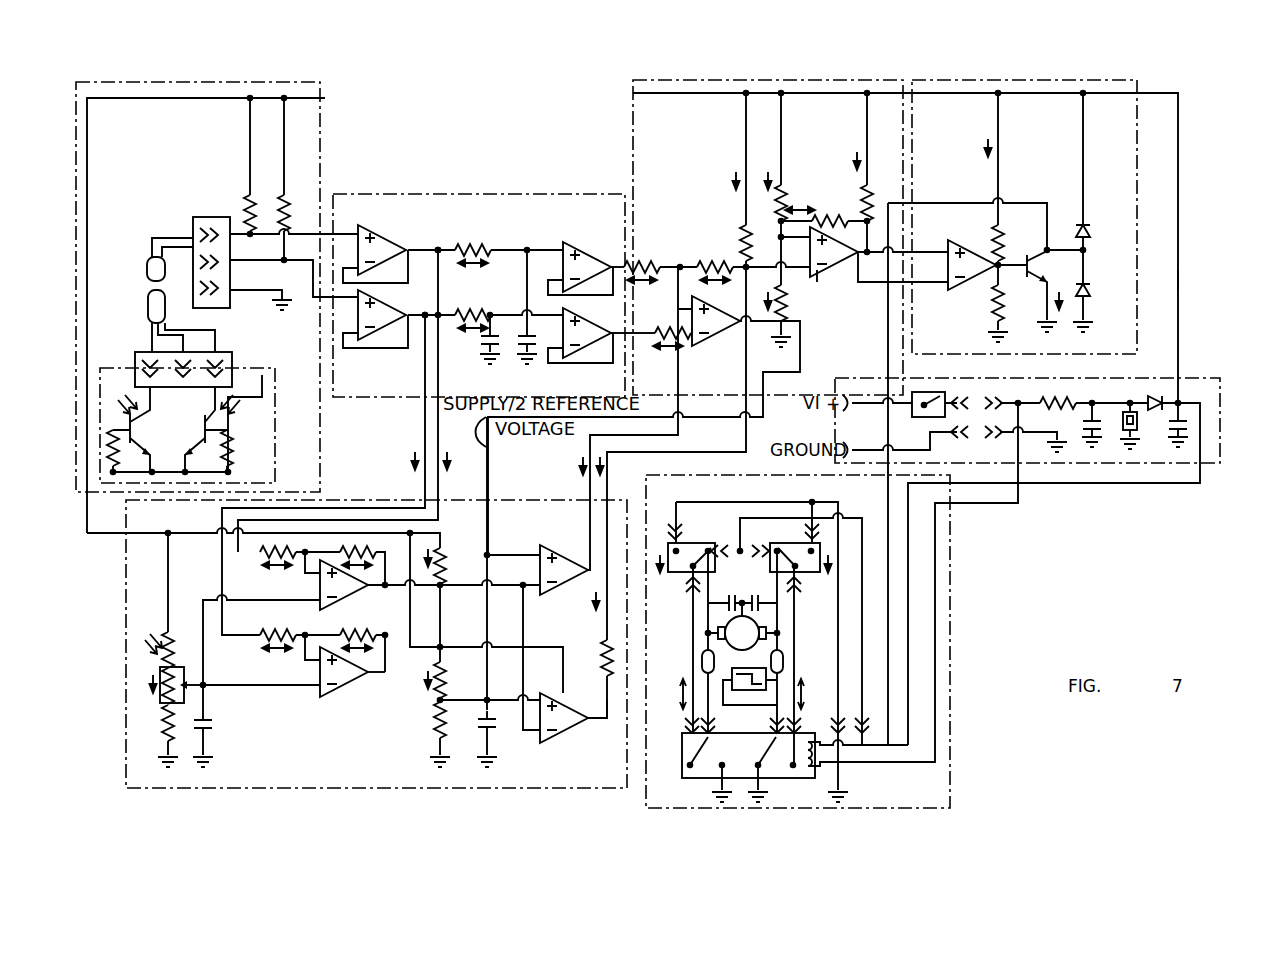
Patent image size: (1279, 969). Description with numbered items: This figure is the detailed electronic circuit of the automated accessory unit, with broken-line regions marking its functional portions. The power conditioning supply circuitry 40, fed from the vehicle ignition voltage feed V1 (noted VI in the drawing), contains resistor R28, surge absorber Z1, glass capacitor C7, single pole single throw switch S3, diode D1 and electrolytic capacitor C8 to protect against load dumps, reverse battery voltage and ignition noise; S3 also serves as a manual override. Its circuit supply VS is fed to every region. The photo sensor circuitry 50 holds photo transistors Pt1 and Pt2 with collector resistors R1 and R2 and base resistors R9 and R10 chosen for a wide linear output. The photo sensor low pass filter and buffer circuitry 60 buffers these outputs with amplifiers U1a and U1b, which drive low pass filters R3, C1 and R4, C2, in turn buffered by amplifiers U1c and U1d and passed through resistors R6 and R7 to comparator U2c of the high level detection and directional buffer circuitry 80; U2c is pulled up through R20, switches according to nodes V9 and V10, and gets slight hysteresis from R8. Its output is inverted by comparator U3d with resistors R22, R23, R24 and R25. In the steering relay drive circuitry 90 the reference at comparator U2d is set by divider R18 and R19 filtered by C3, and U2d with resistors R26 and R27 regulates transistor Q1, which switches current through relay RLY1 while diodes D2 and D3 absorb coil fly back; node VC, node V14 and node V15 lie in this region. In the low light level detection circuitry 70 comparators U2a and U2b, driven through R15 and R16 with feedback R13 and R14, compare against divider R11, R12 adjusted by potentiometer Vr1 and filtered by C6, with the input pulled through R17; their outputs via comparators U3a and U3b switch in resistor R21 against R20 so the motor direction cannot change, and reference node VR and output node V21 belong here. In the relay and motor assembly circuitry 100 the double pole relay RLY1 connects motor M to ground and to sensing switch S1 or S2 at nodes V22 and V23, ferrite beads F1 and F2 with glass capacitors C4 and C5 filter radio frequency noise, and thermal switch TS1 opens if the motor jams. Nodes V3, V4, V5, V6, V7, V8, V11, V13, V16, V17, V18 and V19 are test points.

The photo sensor circuitry 50 is at (234, 82).
The photo sensor low pass filter and buffer circuitry 60 is at (506, 190).
The low light level detection circuitry 70 is at (124, 602).
The high level light intensity detection and directional buffer circuitry 80 is at (804, 82).
The steering relay drive circuitry 90 is at (1044, 82).
The relay and motor assembly circuitry 100 is at (950, 612).
The power conditioning supply circuitry 40 is at (1222, 407).
The collector resistor R1 is at (282, 200).
The collector resistor R2 is at (244, 194).
The low pass filter resistor R3 is at (492, 248).
The low pass filter resistor R4 is at (472, 309).
The input resistor R6 is at (660, 260).
The input resistor R7 is at (669, 329).
The hysteresis resistor R8 is at (715, 262).
The base resistor R9 is at (213, 451).
The base resistor R10 is at (129, 451).
The resistor divider resistor R11 is at (175, 636).
The resistor divider resistor R12 is at (153, 736).
The hysteresis feedback resistor R13 is at (372, 557).
The hysteresis feedback resistor R14 is at (348, 639).
The input resistor R15 is at (263, 560).
The input resistor R16 is at (281, 641).
The pull-up resistor R17 is at (442, 562).
The reference divider resistor R18 is at (432, 682).
The reference divider resistor R19 is at (434, 732).
The pull-up resistor R20 is at (740, 226).
The divider resistor R21 is at (598, 650).
The inverting comparator resistor R22 is at (785, 206).
The inverting comparator resistor R23 is at (796, 302).
The inverting comparator resistor R24 is at (824, 210).
The inverting comparator resistor R25 is at (860, 184).
The transistor drive resistor R26 is at (1013, 189).
The transistor drive resistor R27 is at (1018, 313).
The resistor R28 is at (1056, 391).
The low pass filter capacitor C1 is at (477, 346).
The low pass filter capacitor C2 is at (517, 346).
The filter capacitor C3 is at (480, 724).
The high Q glass capacitor C4 is at (729, 595).
The high Q glass capacitor C5 is at (754, 595).
The filter capacitor C6 is at (207, 730).
The glass capacitor C7 is at (1112, 428).
The electrolytic capacitor C8 is at (1174, 433).
The buffering amplifier U1a is at (394, 234).
The buffering amplifier U1b is at (343, 332).
The buffering amplifier U1c is at (570, 268).
The buffering amplifier U1d is at (562, 351).
The open collector comparator U2a is at (407, 585).
The open collector comparator U2b is at (329, 672).
The open collector comparator U2c is at (644, 415).
The open collector comparator U2d is at (957, 278).
The comparator U3a is at (564, 560).
The comparator U3b is at (573, 722).
The comparator U3d is at (834, 255).
The photo transistor Pt1 is at (218, 429).
The photo transistor Pt2 is at (142, 429).
The potentiometer Vr1 is at (204, 672).
The transistor Q1 is at (1032, 262).
The diode D1 is at (1150, 398).
The diode D2 is at (1086, 232).
The diode D3 is at (1095, 305).
The surge absorber Z1 is at (1141, 424).
The sensing switch S1 is at (694, 546).
The sensing switch S2 is at (801, 641).
The single pole single throw switch S3 is at (923, 420).
The ferrite bead F1 is at (700, 661).
The ferrite bead F2 is at (786, 661).
The motor M is at (742, 626).
The bimetal current limit thermal safety switch TS1 is at (747, 695).
The double pole double throw relay switch RLY1 is at (795, 767).
The voltage feed V1 is at (918, 571).
The test node V3 is at (419, 238).
The test node V4 is at (412, 303).
The test node V5 is at (530, 237).
The test node V6 is at (494, 309).
The test node V7 is at (612, 260).
The test node V8 is at (621, 319).
The test node V9 is at (677, 256).
The test node V10 is at (666, 332).
The test node V11 is at (768, 325).
The test node V13 is at (890, 242).
The test node V14 is at (1015, 278).
The test node V15 is at (1102, 251).
The test node V16 is at (206, 688).
The test node V17 is at (304, 632).
The test node V18 is at (323, 551).
The test node V19 is at (380, 593).
The voltage node V21 is at (608, 723).
The voltage node V22 is at (785, 633).
The voltage node V23 is at (700, 633).
The control voltage node VC is at (1057, 240).
The reference voltage node VR is at (480, 698).
The circuit supply VS is at (1178, 282).